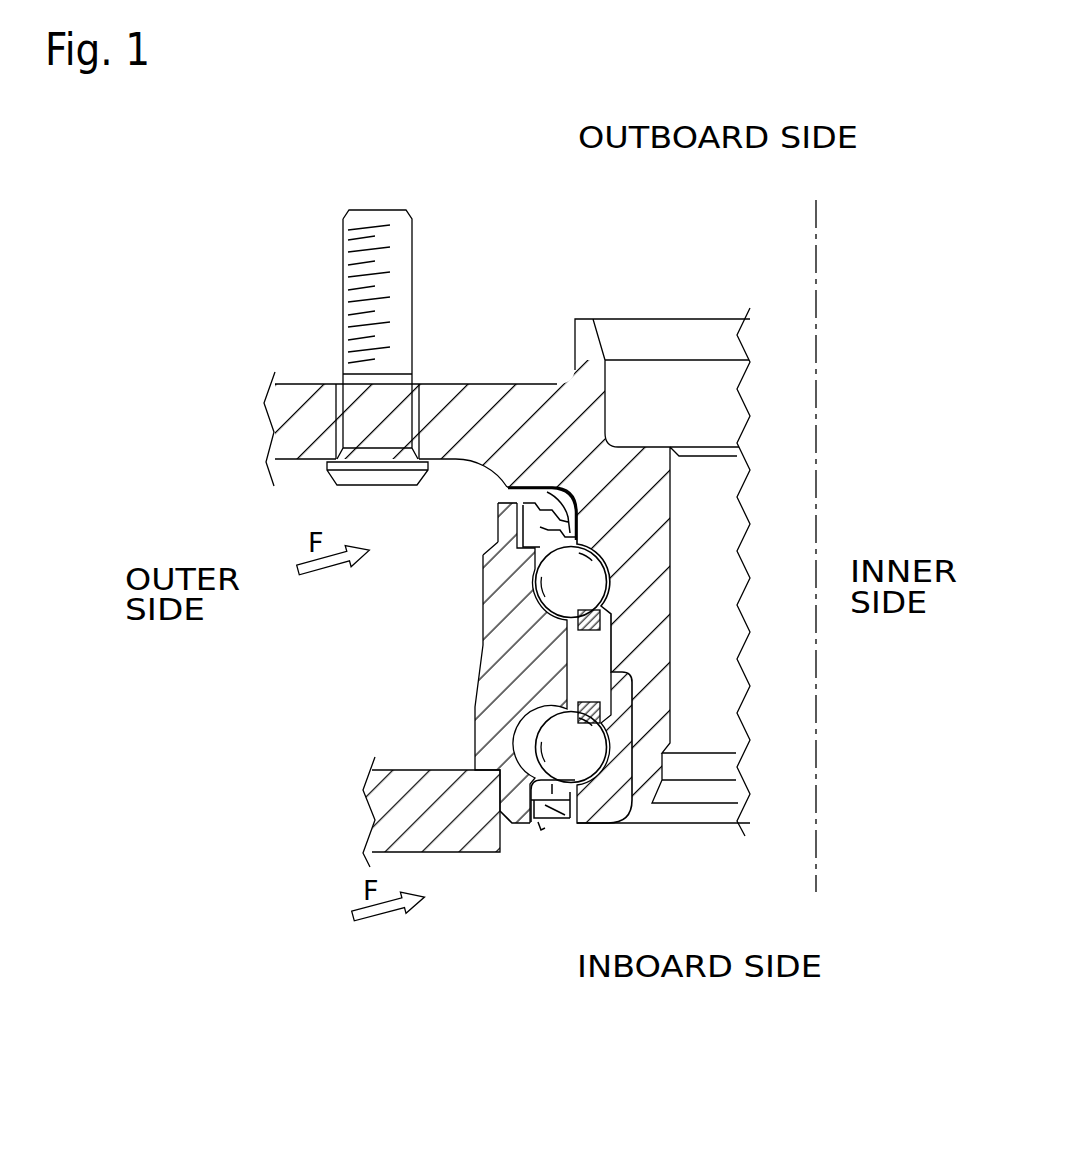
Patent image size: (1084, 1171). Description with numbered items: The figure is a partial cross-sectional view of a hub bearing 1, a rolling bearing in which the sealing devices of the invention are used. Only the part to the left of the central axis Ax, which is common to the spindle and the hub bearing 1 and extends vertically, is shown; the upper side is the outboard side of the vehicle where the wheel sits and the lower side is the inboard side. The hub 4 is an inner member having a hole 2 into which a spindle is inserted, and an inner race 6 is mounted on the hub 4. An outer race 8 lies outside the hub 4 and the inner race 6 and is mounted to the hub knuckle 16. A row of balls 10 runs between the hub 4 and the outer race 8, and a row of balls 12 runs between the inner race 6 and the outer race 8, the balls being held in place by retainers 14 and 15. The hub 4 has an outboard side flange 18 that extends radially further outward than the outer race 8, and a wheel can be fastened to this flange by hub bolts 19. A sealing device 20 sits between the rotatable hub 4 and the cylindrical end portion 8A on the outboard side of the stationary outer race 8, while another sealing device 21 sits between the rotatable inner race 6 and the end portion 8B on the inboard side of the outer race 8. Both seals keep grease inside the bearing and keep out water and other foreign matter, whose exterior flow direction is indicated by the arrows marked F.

The hub bearing 1 is at (676, 280).
The hole 2 is at (531, 613).
The hub 4 is at (660, 630).
The inner race 6 is at (597, 806).
The outer race 8 is at (461, 709).
The cylindrical end portion 8A is at (507, 524).
The end portion 8B is at (517, 826).
The balls 10 is at (550, 577).
The balls 12 is at (540, 742).
The retainer 14 is at (498, 622).
The retainer 15 is at (580, 682).
The hub knuckle 16 is at (437, 853).
The outboard side flange 18 is at (470, 392).
The hub bolt 19 is at (347, 305).
The sealing device 20 is at (508, 496).
The sealing device 21 is at (558, 836).
The central axis Ax is at (817, 735).